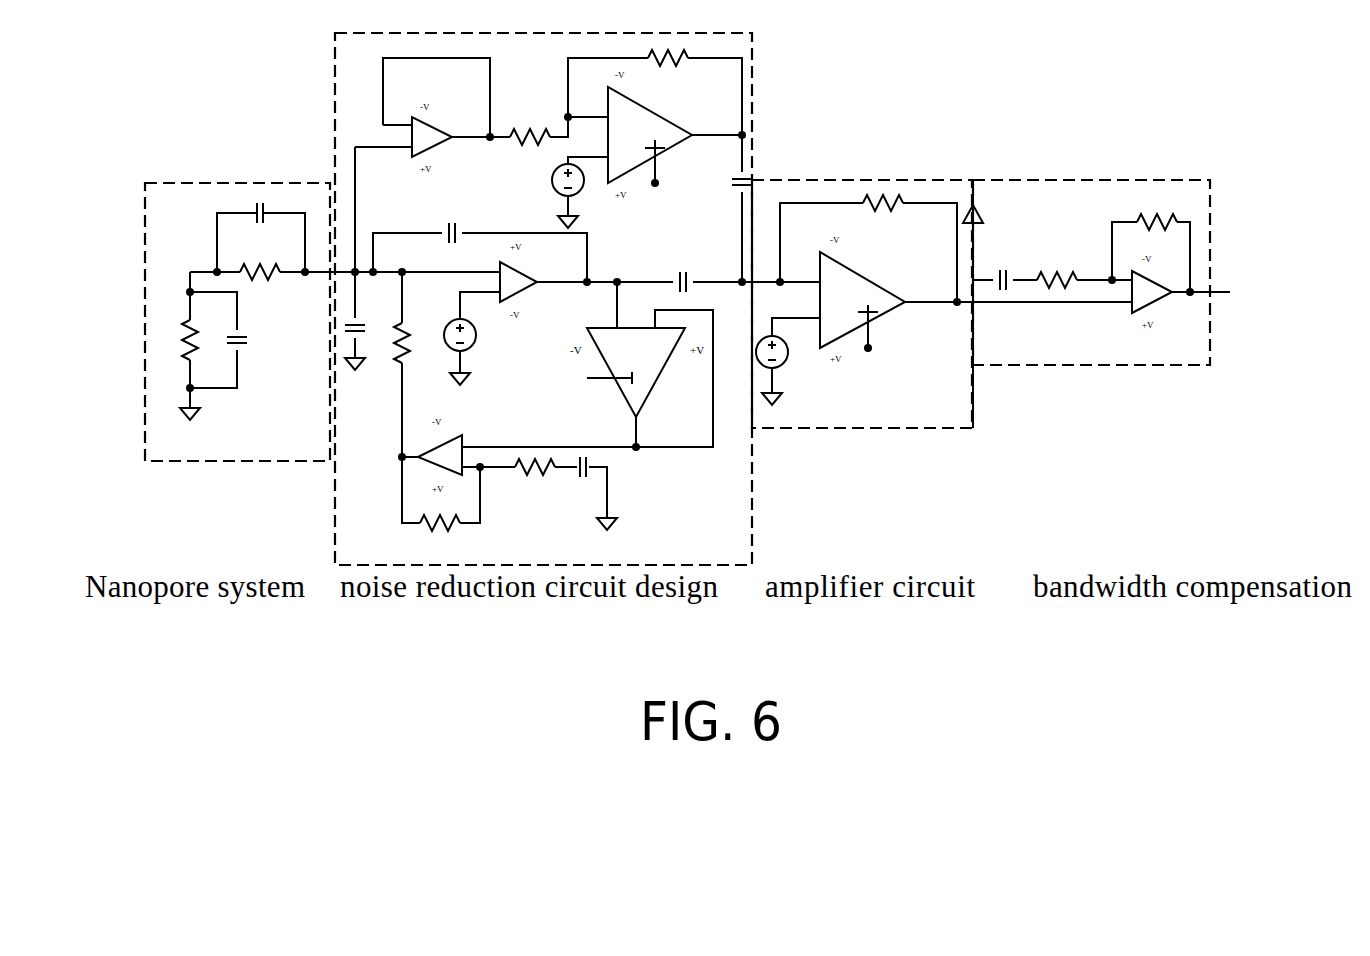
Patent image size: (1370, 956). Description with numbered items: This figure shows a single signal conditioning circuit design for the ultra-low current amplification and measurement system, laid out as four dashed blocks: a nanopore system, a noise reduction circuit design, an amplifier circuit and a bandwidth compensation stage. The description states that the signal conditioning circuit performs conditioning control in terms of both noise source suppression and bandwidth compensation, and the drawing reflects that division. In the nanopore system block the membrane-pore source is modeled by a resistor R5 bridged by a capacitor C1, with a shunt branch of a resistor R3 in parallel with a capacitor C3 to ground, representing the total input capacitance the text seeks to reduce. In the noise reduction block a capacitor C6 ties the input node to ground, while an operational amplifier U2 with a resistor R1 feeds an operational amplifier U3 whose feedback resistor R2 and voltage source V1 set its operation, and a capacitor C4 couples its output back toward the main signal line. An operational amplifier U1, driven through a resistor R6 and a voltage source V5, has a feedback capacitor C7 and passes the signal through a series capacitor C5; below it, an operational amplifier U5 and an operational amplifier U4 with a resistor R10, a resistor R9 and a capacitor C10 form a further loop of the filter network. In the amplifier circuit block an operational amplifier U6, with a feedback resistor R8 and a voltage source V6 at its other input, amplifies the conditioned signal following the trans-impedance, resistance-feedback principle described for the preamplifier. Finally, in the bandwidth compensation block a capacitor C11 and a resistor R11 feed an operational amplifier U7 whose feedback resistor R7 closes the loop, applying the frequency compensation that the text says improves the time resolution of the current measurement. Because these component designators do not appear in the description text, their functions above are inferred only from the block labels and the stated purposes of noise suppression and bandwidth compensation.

The capacitor C1 is at (261, 230).
The resistor R5 is at (260, 263).
The resistor R3 is at (198, 340).
The capacitor C3 is at (223, 340).
The capacitor C6 is at (360, 321).
The capacitor C7 is at (480, 245).
The resistor R6 is at (411, 364).
The operational amplifier U2 is at (432, 107).
The resistor R1 is at (530, 128).
The operational amplifier U3 is at (675, 137).
The resistor R2 is at (668, 49).
The capacitor C4 is at (748, 176).
The voltage source V1 is at (580, 179).
The operational amplifier U1 is at (586, 281).
The voltage source V5 is at (472, 328).
The capacitor C5 is at (746, 274).
The operational amplifier U5 is at (587, 364).
The operational amplifier U4 is at (444, 447).
The resistor R9 is at (528, 477).
The capacitor C10 is at (591, 483).
The resistor R10 is at (441, 504).
The resistor R8 is at (868, 240).
The operational amplifier U6 is at (976, 302).
The voltage source V6 is at (788, 351).
The capacitor C11 is at (1005, 272).
The resistor R11 is at (1084, 271).
The resistor R7 is at (1151, 244).
The operational amplifier U7 is at (1181, 292).